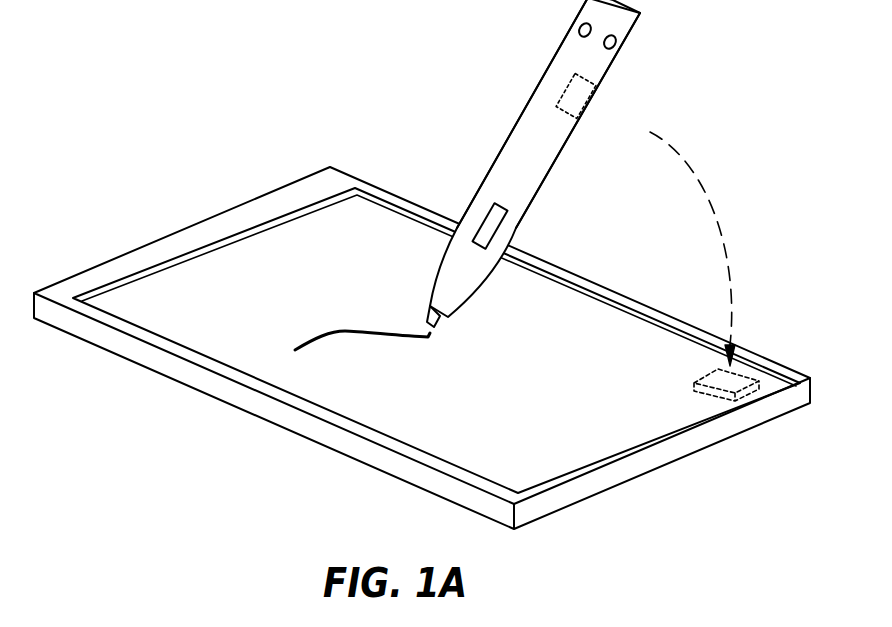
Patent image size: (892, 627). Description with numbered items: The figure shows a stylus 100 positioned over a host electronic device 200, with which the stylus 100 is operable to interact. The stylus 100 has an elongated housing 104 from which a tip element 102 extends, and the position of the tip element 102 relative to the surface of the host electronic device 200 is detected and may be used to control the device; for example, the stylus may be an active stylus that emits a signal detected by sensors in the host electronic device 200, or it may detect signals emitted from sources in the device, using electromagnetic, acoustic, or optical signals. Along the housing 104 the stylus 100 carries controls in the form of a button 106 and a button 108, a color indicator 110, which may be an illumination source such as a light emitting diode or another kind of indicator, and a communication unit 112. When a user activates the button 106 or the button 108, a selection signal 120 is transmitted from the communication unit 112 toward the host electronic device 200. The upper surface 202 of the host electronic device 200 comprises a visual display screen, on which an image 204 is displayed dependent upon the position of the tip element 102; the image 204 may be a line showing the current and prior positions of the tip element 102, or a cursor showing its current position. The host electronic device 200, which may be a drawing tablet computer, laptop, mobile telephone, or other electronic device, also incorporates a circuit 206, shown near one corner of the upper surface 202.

The stylus 100 is at (566, 167).
The tip element 102 is at (427, 318).
The elongated housing 104 is at (550, 72).
The button 106 is at (578, 25).
The button 108 is at (618, 45).
The color indicator 110 is at (480, 222).
The communication unit 112 is at (592, 85).
The selection signal 120 is at (710, 217).
The host electronic device 200 is at (218, 212).
The upper surface 202 is at (338, 232).
The image 204 is at (362, 332).
The circuit 206 is at (727, 380).